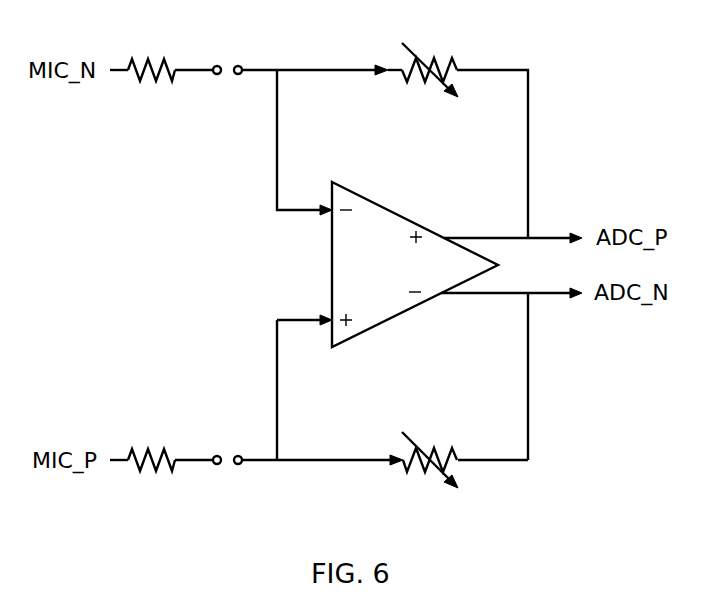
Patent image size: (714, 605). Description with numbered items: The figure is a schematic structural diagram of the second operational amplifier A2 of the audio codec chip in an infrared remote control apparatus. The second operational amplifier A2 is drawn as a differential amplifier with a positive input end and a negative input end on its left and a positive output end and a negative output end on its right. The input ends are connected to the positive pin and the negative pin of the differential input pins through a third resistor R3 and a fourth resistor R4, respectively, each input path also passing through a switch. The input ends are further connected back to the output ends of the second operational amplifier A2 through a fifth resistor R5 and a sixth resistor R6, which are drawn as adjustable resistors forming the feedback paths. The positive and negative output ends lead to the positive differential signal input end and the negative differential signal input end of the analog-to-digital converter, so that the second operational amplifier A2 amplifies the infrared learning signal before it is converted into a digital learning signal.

The third resistor R3 is at (151, 57).
The fourth resistor R4 is at (151, 476).
The fifth resistor R5 is at (430, 63).
The sixth resistor R6 is at (430, 468).
The second operational amplifier A2 is at (415, 264).